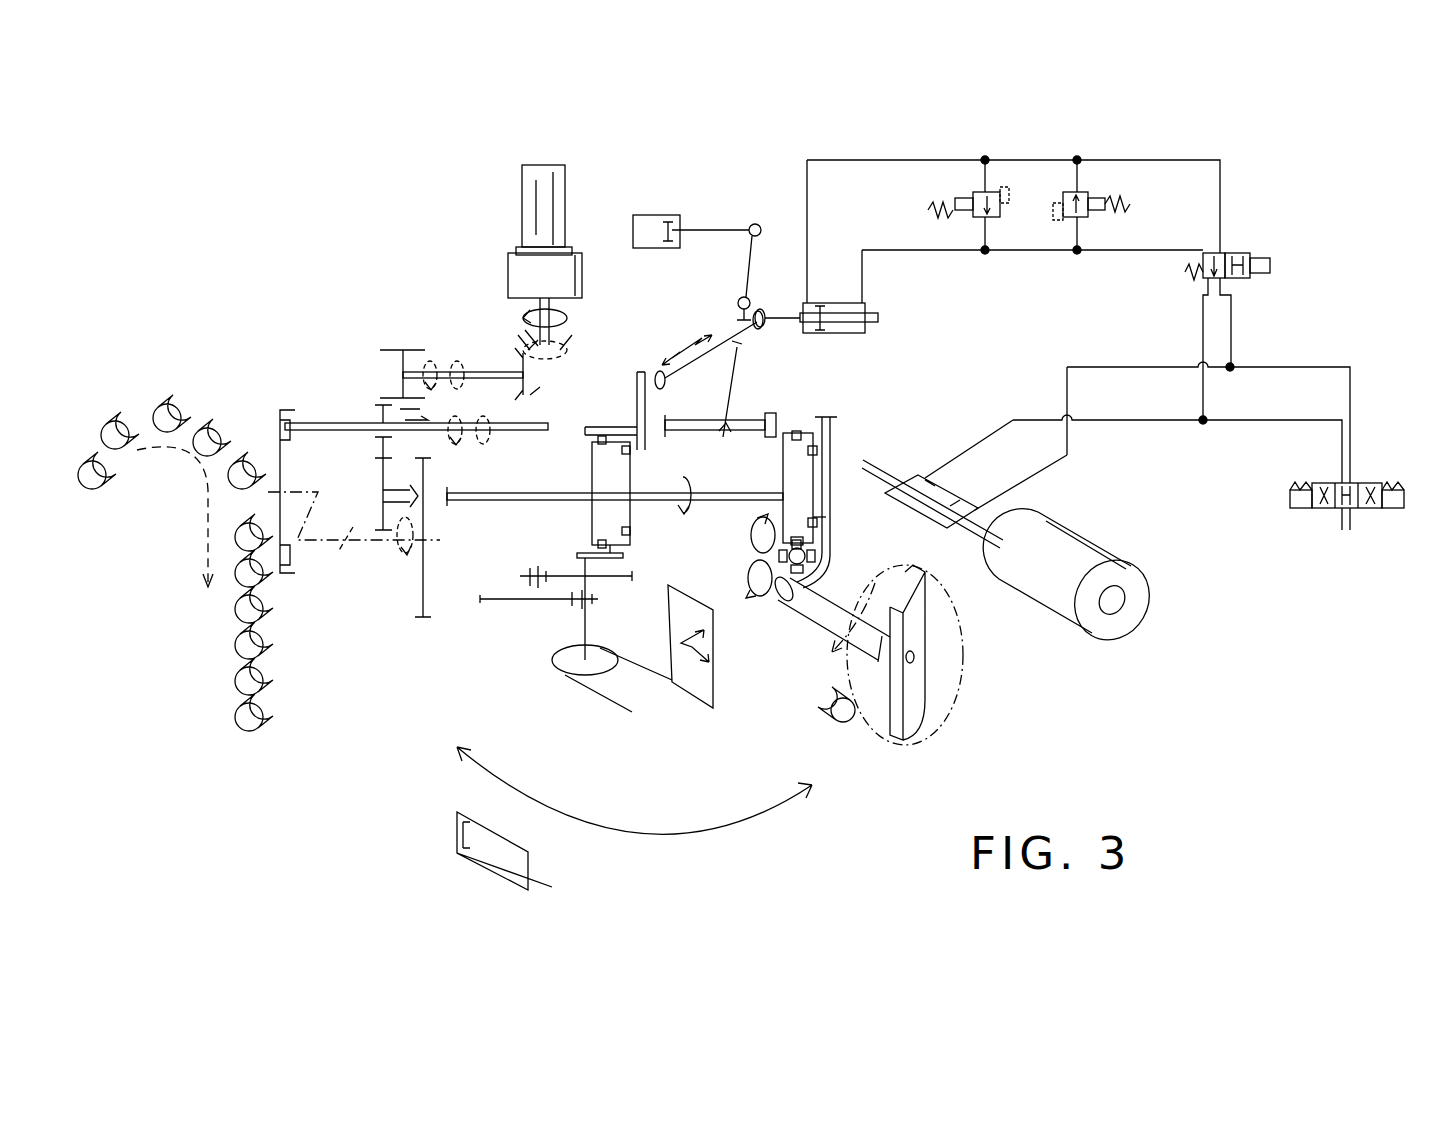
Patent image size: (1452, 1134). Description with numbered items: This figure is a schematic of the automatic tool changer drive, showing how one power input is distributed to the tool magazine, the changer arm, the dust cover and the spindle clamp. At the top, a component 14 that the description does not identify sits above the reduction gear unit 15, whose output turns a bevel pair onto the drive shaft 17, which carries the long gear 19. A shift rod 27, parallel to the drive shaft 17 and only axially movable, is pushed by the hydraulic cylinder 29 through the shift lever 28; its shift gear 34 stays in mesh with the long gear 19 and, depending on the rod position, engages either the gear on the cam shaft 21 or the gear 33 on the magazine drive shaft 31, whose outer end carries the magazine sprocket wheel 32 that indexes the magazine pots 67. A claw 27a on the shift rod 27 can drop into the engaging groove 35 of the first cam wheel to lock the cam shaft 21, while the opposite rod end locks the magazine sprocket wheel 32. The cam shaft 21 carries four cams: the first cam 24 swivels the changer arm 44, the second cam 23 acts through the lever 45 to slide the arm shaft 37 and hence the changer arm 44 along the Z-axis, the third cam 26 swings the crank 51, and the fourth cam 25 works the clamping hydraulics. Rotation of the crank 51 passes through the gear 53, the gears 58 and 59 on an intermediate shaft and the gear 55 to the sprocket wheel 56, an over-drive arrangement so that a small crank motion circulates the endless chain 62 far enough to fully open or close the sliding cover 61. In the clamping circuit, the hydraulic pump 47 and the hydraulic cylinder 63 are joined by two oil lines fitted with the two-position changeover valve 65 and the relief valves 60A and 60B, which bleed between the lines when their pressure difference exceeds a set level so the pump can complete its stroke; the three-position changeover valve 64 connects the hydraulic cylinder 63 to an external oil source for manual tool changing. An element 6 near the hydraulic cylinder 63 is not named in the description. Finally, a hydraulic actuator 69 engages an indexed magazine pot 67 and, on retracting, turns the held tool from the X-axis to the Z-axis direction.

The motor 14 is at (530, 187).
The reduction gear unit 15 is at (508, 263).
The drive shaft 17 is at (515, 375).
The long gear 19 is at (395, 352).
The shift gear 34 is at (378, 412).
The magazine sprocket wheel 32 is at (284, 478).
The magazine drive shaft 31 is at (354, 543).
The gear 33 is at (423, 600).
The cam shaft 21 is at (512, 493).
The fourth cam 25 is at (630, 524).
The third cam 26 is at (600, 427).
The shift rod 27 is at (690, 421).
The claw 27a is at (774, 415).
The shift lever 28 is at (740, 358).
The hydraulic cylinder 29 is at (655, 217).
The hydraulic pump 47 is at (833, 303).
The relief valve 60B is at (960, 200).
The relief valve 60A is at (1105, 203).
The two-position changeover valve 65 is at (1240, 253).
The three-position changeover valve 64 is at (1312, 510).
The engaging groove 35 is at (783, 456).
The lever 45 is at (814, 556).
The second cam 23 is at (814, 517).
The first cam 24 is at (828, 418).
The arm shaft 37 is at (800, 612).
The changer arm 44 is at (915, 658).
The hydraulic cylinder 63 is at (945, 496).
The hydraulic motor 6 is at (1100, 540).
The crank 51 is at (580, 553).
The gear 53 is at (630, 581).
The gear 58 is at (530, 570).
The gear 59 is at (490, 599).
The gear 55 is at (572, 604).
The sprocket wheel 56 is at (555, 664).
The endless chain 62 is at (646, 690).
The sliding cover 61 is at (680, 600).
The magazine pot 67 is at (265, 645).
The hydraulic actuator 69 is at (466, 856).